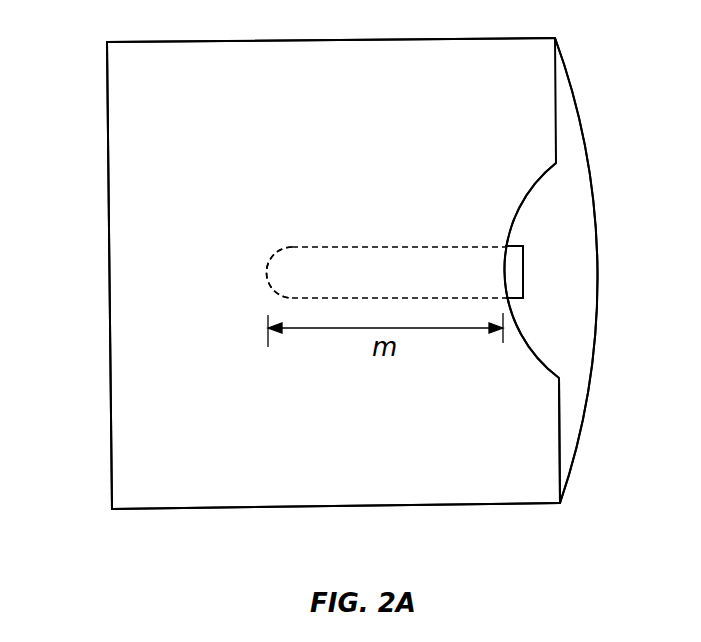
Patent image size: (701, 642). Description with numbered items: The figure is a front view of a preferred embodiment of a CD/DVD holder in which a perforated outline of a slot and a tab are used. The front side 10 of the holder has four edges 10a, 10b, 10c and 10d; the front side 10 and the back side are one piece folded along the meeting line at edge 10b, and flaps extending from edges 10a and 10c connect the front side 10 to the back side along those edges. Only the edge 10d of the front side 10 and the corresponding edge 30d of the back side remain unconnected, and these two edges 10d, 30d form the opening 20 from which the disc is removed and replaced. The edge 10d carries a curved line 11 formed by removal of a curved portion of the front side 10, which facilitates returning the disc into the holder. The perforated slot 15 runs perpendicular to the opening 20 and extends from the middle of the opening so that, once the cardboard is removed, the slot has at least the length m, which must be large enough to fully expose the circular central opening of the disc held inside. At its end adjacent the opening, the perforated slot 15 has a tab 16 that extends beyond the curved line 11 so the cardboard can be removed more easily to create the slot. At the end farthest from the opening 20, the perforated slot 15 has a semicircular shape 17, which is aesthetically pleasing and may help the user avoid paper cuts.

The front side 10 is at (498, 78).
The edge of the front side 10a is at (322, 38).
The edge of the front side 10b is at (109, 272).
The edge of the front side 10c is at (328, 510).
The edge of the front side 10d is at (560, 440).
The curved line 11 is at (518, 203).
The perforated slot 15 is at (322, 247).
The tab 16 is at (509, 288).
The semicircular shape 17 is at (268, 270).
The opening 20 is at (587, 251).
The edge of the back side 30d is at (583, 130).